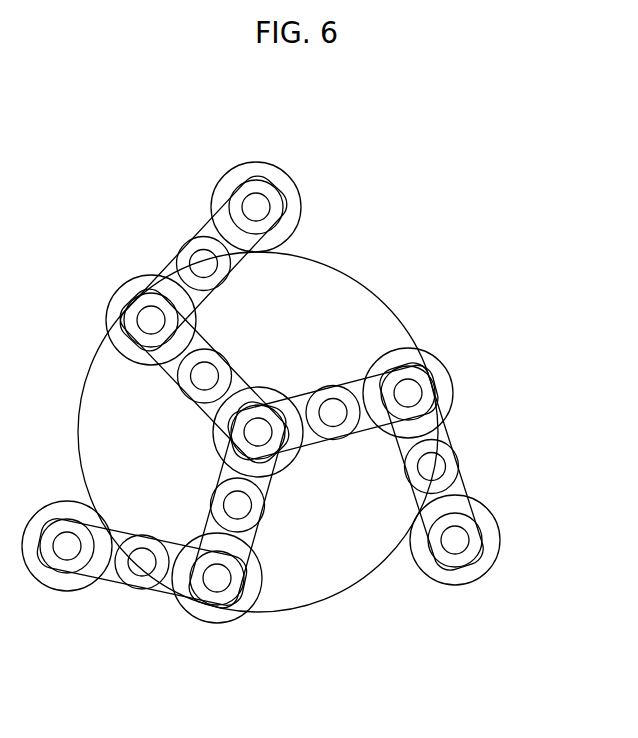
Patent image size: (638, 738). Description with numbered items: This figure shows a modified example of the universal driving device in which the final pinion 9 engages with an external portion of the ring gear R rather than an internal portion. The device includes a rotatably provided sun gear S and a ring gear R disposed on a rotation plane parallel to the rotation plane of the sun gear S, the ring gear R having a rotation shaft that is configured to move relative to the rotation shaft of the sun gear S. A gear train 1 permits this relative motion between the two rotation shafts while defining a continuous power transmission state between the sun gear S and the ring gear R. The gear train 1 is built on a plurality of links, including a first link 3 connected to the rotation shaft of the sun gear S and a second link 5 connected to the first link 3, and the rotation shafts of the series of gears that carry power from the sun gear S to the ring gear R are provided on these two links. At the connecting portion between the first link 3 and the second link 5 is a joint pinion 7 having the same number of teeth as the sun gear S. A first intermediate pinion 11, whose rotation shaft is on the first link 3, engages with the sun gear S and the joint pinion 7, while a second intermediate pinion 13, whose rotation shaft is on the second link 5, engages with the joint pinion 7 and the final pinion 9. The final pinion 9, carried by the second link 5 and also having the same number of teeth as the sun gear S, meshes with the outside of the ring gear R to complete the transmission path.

The gear train 1 is at (296, 401).
The first link 3 is at (150, 363).
The second link 5 is at (213, 187).
The joint pinion 7 is at (113, 312).
The final pinion 9 is at (243, 168).
The first intermediate pinion 11 is at (230, 360).
The second intermediate pinion 13 is at (182, 245).
The ring gear R is at (332, 263).
The sun gear S is at (290, 467).